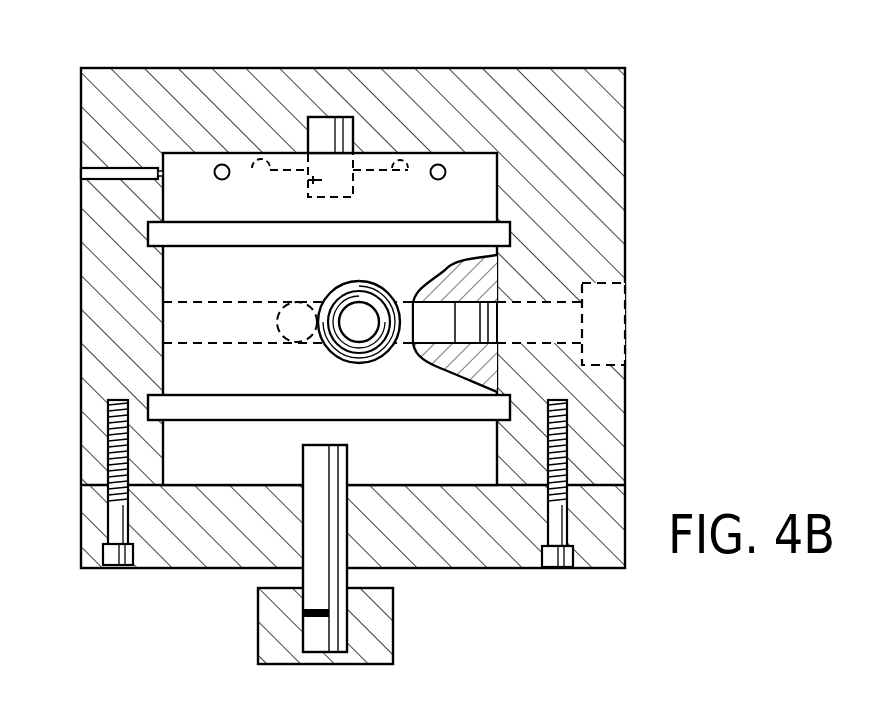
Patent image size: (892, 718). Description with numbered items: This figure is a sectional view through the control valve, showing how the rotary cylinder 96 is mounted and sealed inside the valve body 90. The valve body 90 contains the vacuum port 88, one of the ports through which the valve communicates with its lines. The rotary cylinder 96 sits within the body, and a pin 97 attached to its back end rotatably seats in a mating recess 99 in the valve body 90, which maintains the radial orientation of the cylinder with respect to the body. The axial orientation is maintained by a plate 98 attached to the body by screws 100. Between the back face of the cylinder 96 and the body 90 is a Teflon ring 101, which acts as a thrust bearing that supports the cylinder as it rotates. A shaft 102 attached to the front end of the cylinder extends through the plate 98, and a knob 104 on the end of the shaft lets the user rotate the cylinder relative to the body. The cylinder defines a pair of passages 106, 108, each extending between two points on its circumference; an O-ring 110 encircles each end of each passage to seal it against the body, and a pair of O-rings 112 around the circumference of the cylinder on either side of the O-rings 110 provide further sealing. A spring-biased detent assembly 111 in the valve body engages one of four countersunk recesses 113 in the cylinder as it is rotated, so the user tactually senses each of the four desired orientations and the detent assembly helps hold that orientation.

The vacuum port 88 is at (613, 300).
The valve body 90 is at (184, 115).
The rotary cylinder 96 is at (228, 463).
The pin 97 is at (297, 188).
The plate 98 is at (467, 540).
The mating recess 99 is at (328, 117).
The screws 100 is at (113, 556).
The Teflon ring 101 is at (369, 163).
The shaft 102 is at (335, 467).
The knob 104 is at (393, 622).
The passage 106 is at (202, 325).
The passage 108 is at (435, 313).
The O-ring 110 is at (345, 290).
The spring-biased detent assembly 111 is at (107, 175).
The O-rings 112 is at (198, 236).
The countersunk recesses 113 is at (460, 186).